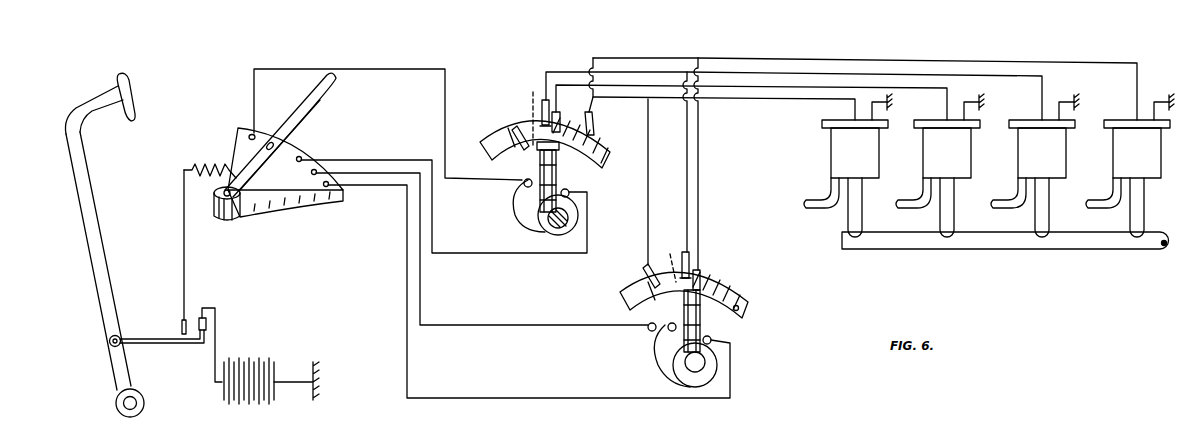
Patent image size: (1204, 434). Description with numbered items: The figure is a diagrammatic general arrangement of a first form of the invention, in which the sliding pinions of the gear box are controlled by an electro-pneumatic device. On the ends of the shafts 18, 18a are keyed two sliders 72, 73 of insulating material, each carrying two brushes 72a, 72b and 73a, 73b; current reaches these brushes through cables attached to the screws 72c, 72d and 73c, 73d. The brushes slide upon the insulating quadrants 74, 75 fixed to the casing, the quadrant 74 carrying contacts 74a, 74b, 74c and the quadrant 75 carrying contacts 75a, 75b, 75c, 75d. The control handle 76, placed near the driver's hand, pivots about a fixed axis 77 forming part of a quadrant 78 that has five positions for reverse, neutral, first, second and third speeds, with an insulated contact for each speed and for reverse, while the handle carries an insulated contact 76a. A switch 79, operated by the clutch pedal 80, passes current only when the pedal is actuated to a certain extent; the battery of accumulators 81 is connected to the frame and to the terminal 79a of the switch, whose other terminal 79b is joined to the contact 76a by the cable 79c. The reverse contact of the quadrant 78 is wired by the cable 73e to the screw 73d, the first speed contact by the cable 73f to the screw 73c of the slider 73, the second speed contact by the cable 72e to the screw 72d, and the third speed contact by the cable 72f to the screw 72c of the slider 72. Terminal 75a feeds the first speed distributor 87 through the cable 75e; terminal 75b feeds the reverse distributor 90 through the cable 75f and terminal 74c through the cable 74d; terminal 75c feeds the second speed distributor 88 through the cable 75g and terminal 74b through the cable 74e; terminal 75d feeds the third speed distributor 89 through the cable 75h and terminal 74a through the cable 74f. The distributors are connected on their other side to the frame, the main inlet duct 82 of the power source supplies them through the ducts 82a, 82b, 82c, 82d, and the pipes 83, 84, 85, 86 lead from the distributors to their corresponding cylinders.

The shaft 18 is at (648, 329).
The shaft 18a is at (552, 228).
The slider 72 is at (665, 372).
The brush 72a is at (702, 306).
The brush 72b is at (663, 258).
The screw 72c is at (711, 340).
The screw 72d is at (668, 331).
The cable 72e is at (506, 326).
The cable 72f is at (466, 398).
The slider 73 is at (540, 222).
The brush 73a is at (558, 168).
The brush 73b is at (536, 111).
The screw 73c is at (569, 192).
The screw 73d is at (524, 187).
The cable 73e is at (367, 68).
The cable 73f is at (503, 254).
The quadrant 74 is at (748, 294).
The contact 74a is at (702, 278).
The contact 74b is at (692, 254).
The contact 74c is at (640, 270).
The cable 74d is at (649, 185).
The cable 74e is at (688, 148).
The cable 74f is at (699, 186).
The quadrant 75 is at (600, 143).
The contact 75a is at (562, 122).
The contact 75b is at (546, 98).
The contact 75c is at (512, 130).
The contact 75d is at (596, 122).
The cable 75e is at (740, 99).
The cable 75f is at (784, 89).
The cable 75g is at (742, 58).
The cable 75h is at (946, 62).
The control handle 76 is at (300, 110).
The insulated contact 76a is at (280, 136).
The fixed axis 77 is at (214, 194).
The quadrant 78 is at (288, 214).
The switch 79 is at (172, 345).
The terminal 79a is at (208, 322).
The terminal 79b is at (181, 328).
The cable 79c is at (185, 258).
The clutch pedal 80 is at (95, 218).
The battery of accumulators 81 is at (258, 358).
The main inlet duct 82 is at (988, 250).
The duct 82a is at (954, 218).
The duct 82b is at (1048, 218).
The duct 82c is at (1145, 222).
The duct 82d is at (862, 218).
The pipe 83 is at (923, 204).
The pipe 84 is at (1018, 204).
The pipe 85 is at (1112, 204).
The pipe 86 is at (820, 204).
The first speed electro-pneumatic distributor 87 is at (949, 136).
The second speed electro-pneumatic distributor 88 is at (1044, 136).
The third speed electro-pneumatic distributor 89 is at (1139, 136).
The reverse electro-pneumatic distributor 90 is at (857, 136).